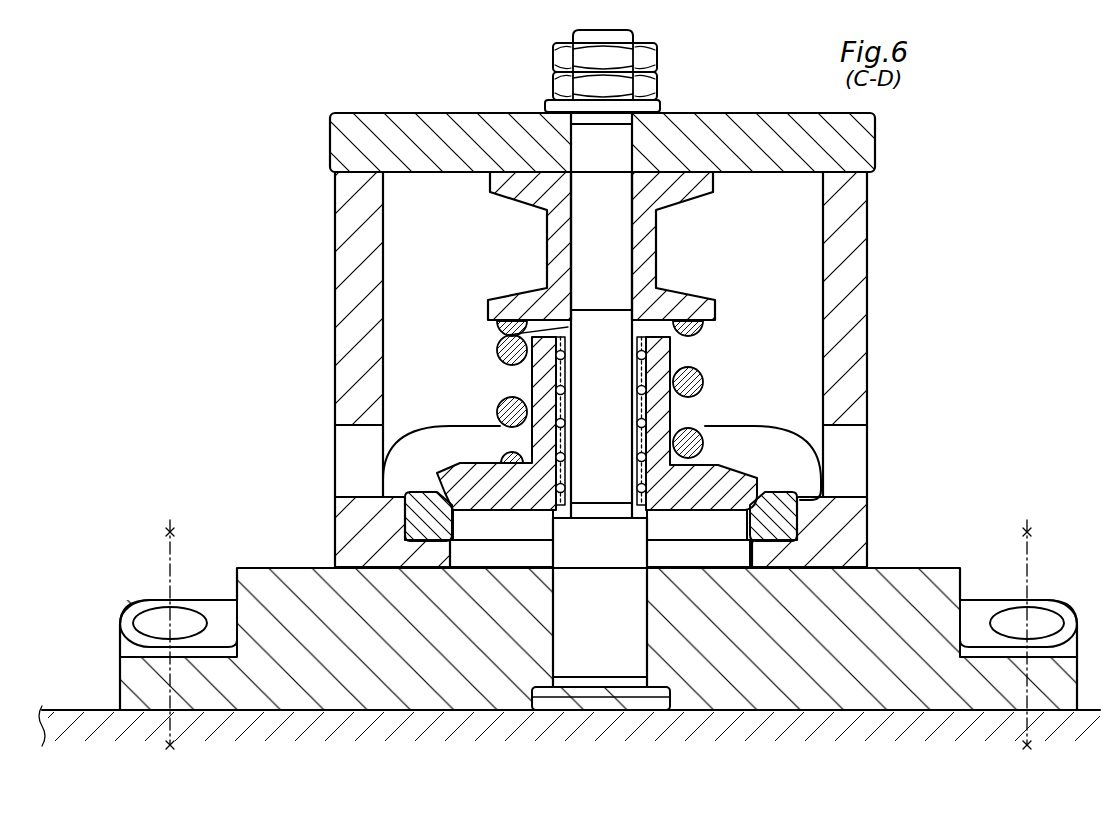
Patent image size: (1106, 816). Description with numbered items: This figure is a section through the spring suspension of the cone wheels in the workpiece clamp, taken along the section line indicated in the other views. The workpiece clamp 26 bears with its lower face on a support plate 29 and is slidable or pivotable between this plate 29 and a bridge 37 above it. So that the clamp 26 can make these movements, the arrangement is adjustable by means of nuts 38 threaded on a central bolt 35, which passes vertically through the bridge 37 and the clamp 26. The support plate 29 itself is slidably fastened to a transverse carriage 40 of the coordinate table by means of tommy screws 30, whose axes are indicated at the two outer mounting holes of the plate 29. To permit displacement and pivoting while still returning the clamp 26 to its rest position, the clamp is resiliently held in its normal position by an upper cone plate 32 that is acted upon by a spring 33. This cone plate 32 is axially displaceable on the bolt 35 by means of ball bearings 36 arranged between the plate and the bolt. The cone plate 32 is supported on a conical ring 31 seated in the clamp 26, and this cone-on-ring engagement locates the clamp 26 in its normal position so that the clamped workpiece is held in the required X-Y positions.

The workpiece clamp 26 is at (853, 312).
The support plate 29 is at (920, 578).
The tommy screws 30 is at (173, 532).
The conical ring 31 is at (772, 522).
The upper cone plate 32 is at (725, 483).
The spring 33 is at (703, 387).
The bolt 35 is at (587, 153).
The ball bearings 36 is at (650, 355).
The bridge 37 is at (858, 145).
The nuts 38 is at (650, 85).
The transverse carriage 40 is at (87, 716).